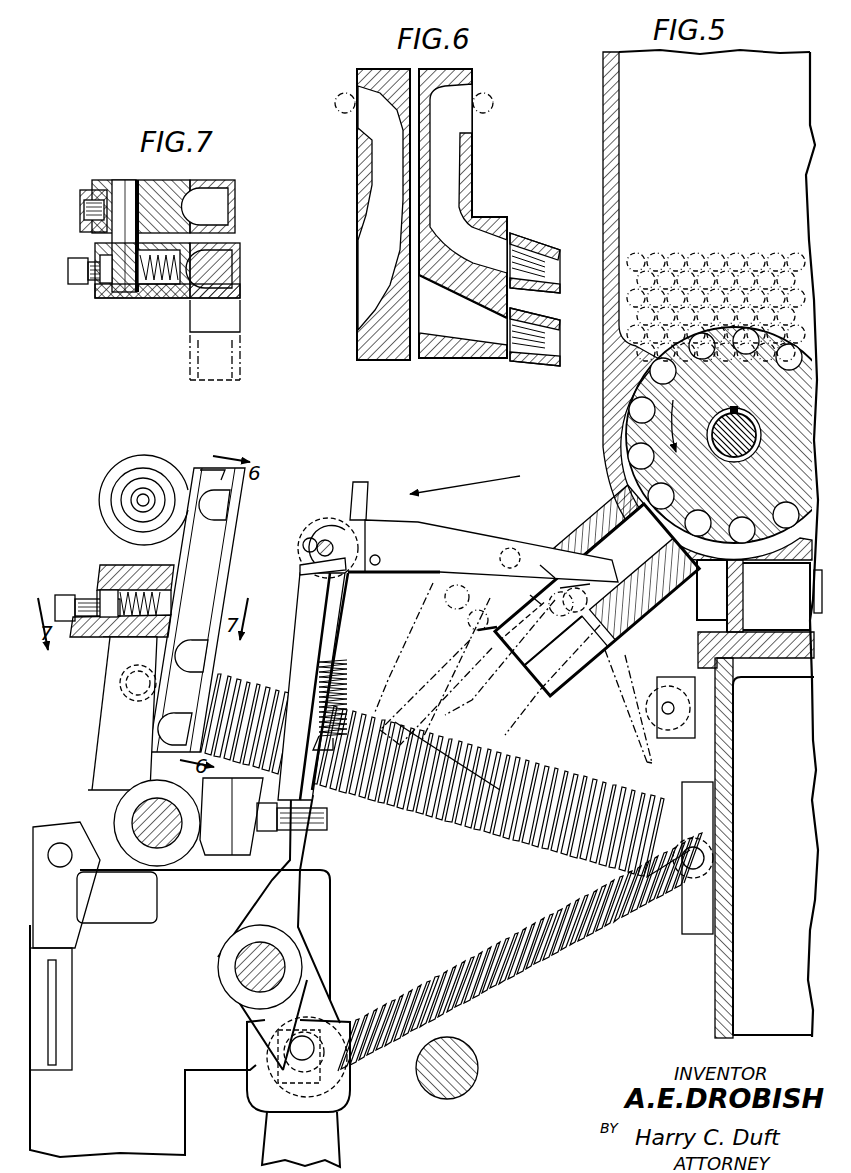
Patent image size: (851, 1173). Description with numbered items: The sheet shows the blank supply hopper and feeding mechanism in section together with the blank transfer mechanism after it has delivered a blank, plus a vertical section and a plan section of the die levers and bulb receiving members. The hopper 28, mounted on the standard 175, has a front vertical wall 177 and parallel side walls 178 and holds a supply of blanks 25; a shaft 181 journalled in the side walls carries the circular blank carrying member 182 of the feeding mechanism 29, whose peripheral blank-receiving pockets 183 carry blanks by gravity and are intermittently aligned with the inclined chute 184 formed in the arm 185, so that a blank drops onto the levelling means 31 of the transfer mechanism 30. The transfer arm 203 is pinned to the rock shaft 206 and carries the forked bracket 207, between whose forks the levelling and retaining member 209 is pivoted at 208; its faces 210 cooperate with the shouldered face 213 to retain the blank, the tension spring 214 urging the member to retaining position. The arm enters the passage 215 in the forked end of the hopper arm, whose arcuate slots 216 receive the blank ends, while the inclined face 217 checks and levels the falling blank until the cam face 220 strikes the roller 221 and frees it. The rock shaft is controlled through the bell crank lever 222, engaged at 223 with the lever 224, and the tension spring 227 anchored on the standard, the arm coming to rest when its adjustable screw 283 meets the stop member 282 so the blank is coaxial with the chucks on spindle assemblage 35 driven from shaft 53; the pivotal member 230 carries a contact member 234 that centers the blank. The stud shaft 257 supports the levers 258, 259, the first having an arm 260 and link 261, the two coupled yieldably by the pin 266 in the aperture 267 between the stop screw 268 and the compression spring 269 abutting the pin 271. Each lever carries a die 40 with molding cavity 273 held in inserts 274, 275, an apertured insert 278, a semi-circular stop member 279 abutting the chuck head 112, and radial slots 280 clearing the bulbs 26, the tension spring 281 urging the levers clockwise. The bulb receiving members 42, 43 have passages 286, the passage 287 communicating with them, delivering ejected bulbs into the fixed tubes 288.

In FIG. 5, the blanks 25 is at (726, 268).
In FIG. 6, the bulbs 26 is at (336, 100).
In FIG. 5, the hopper 28 is at (600, 160).
In FIG. 5, the rotary blank feeding mechanism 29 is at (612, 425).
In FIG. 5, the blank transfer mechanism 30 is at (300, 660).
In FIG. 5, the levelling means 31 is at (338, 485).
In FIG. 5, the spindle assemblage 35 is at (292, 586).
In FIG. 5, the molding die 40 is at (126, 514).
In FIG. 7, the bulb-receiving member 42 is at (236, 184).
In FIG. 6, the bulb-receiving member 42 is at (370, 68).
In FIG. 7, the bulb-receiving member 43 is at (243, 291).
In FIG. 6, the bulb-receiving member 43 is at (468, 68).
In FIG. 5, the bulb-receiving member 43 is at (245, 482).
In FIG. 5, the driven shaft 53 is at (475, 1056).
In FIG. 5, the chuck head 112 is at (318, 522).
In FIG. 5, the standard 175 is at (716, 988).
In FIG. 5, the front vertical wall 177 is at (604, 184).
In FIG. 5, the side walls 178 is at (640, 205).
In FIG. 5, the shaft 181 is at (732, 445).
In FIG. 5, the circular blank carrying member 182 is at (636, 458).
In FIG. 5, the blank-receiving pockets 183 is at (728, 355).
In FIG. 5, the inclined chute 184 is at (648, 568).
In FIG. 5, the arm 185 is at (620, 505).
In FIG. 5, the transfer arm 203 is at (250, 897).
In FIG. 5, the rock shaft 206 is at (250, 1000).
In FIG. 5, the forked bracket 207 is at (408, 552).
In FIG. 5, the pivot 208 is at (382, 560).
In FIG. 5, the blank levelling and retaining member 209 is at (625, 608).
In FIG. 5, the faces 210 is at (318, 545).
In FIG. 5, the shouldered face 213 is at (300, 568).
In FIG. 5, the tension spring 214 is at (345, 688).
In FIG. 5, the passage 215 is at (545, 565).
In FIG. 5, the arcuate slots 216 is at (452, 652).
In FIG. 5, the inclined face 217 is at (535, 580).
In FIG. 5, the cam face 220 is at (645, 690).
In FIG. 5, the roller 221 is at (664, 738).
In FIG. 5, the bell crank lever 222 is at (325, 1148).
In FIG. 5, the forked engagement 223 is at (310, 1032).
In FIG. 5, the lever 224 is at (302, 988).
In FIG. 5, the tension spring 227 is at (565, 952).
In FIG. 5, the pivotal member 230 is at (500, 556).
In FIG. 5, the adjustable contact member 234 is at (435, 588).
In FIG. 5, the stud shaft 257 is at (165, 866).
In FIG. 7, the lever 258 is at (184, 178).
In FIG. 5, the lever 258 is at (103, 756).
In FIG. 7, the lever 259 is at (163, 300).
In FIG. 5, the lever 259 is at (112, 722).
In FIG. 5, the arm 260 is at (80, 830).
In FIG. 5, the link 261 is at (56, 1012).
In FIG. 7, the pin 266 is at (120, 182).
In FIG. 5, the pin 266 is at (108, 590).
In FIG. 7, the aperture 267 is at (115, 298).
In FIG. 5, the aperture 267 is at (115, 638).
In FIG. 7, the adjustable stop screw 268 is at (90, 288).
In FIG. 5, the adjustable stop screw 268 is at (73, 597).
In FIG. 7, the compression spring 269 is at (135, 250).
In FIG. 5, the compression spring 269 is at (120, 572).
In FIG. 7, the pin 271 is at (184, 288).
In FIG. 5, the pin 271 is at (150, 592).
In FIG. 5, the molding cavity 273 is at (131, 497).
In FIG. 5, the outer ring-shaped insert 274 is at (155, 468).
In FIG. 5, the inner ring-shaped insert 275 is at (122, 484).
In FIG. 5, the apertured insert 278 is at (137, 502).
In FIG. 5, the semi-circular stop member 279 is at (120, 470).
In FIG. 5, the radial slots 280 is at (190, 492).
In FIG. 5, the tension spring 281 is at (460, 818).
In FIG. 5, the stop member 282 is at (280, 850).
In FIG. 5, the adjustable screw 283 is at (290, 810).
In FIG. 7, the bulb receiving passages 286 is at (222, 270).
In FIG. 6, the bulb receiving passages 286 is at (364, 140).
In FIG. 5, the bulb receiving passages 286 is at (198, 650).
In FIG. 6, the passage 287 is at (452, 328).
In FIG. 5, the passage 287 is at (209, 750).
In FIG. 6, the fixed tubes 288 is at (530, 278).